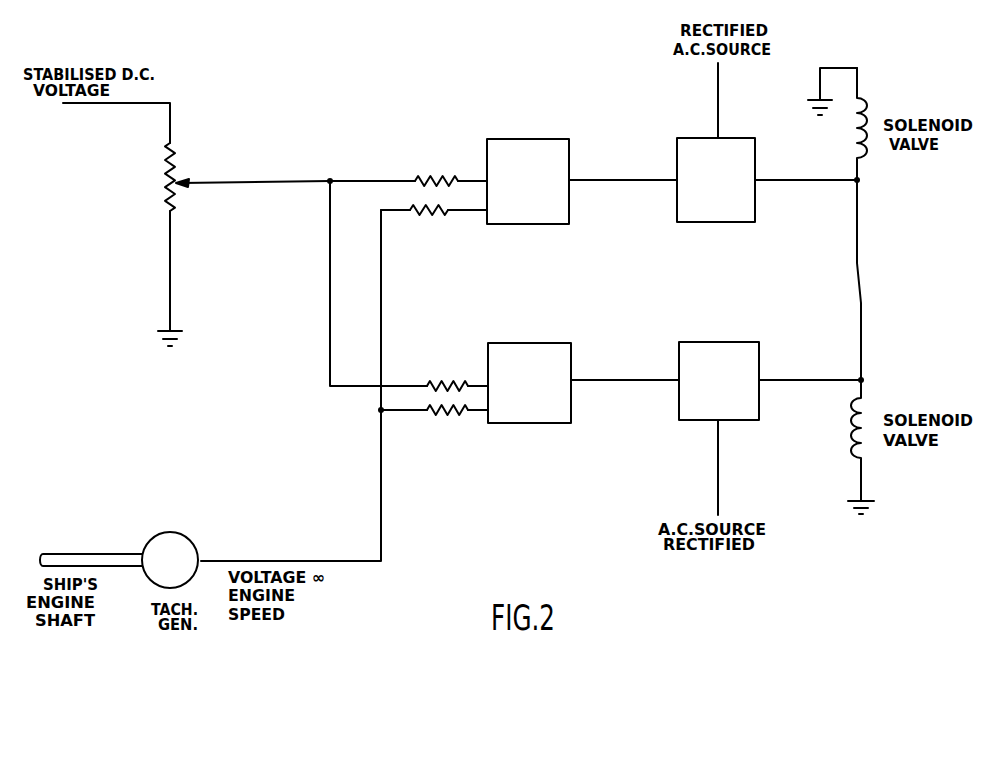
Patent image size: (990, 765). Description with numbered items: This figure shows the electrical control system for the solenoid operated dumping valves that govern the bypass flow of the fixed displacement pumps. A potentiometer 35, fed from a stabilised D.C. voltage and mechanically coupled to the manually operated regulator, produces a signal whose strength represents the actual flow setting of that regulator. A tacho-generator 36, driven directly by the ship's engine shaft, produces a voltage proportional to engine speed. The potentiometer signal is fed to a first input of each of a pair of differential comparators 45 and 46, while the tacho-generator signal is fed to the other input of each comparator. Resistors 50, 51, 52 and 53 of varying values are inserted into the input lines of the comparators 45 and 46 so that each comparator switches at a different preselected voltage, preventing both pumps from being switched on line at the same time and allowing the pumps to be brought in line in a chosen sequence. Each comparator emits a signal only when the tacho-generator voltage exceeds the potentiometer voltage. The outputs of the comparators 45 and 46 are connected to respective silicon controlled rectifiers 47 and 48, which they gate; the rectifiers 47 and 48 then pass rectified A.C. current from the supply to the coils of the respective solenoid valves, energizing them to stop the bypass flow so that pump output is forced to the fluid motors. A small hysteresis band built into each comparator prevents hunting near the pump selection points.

The potentiometer 35 is at (179, 188).
The tacho-generator 36 is at (175, 530).
The differential comparator 45 is at (566, 213).
The differential comparator 46 is at (568, 340).
The silicon controlled rectifier 47 is at (752, 219).
The silicon controlled rectifier 48 is at (756, 363).
The resistor 50 is at (414, 174).
The resistor 51 is at (415, 211).
The resistor 52 is at (431, 376).
The resistor 53 is at (447, 412).